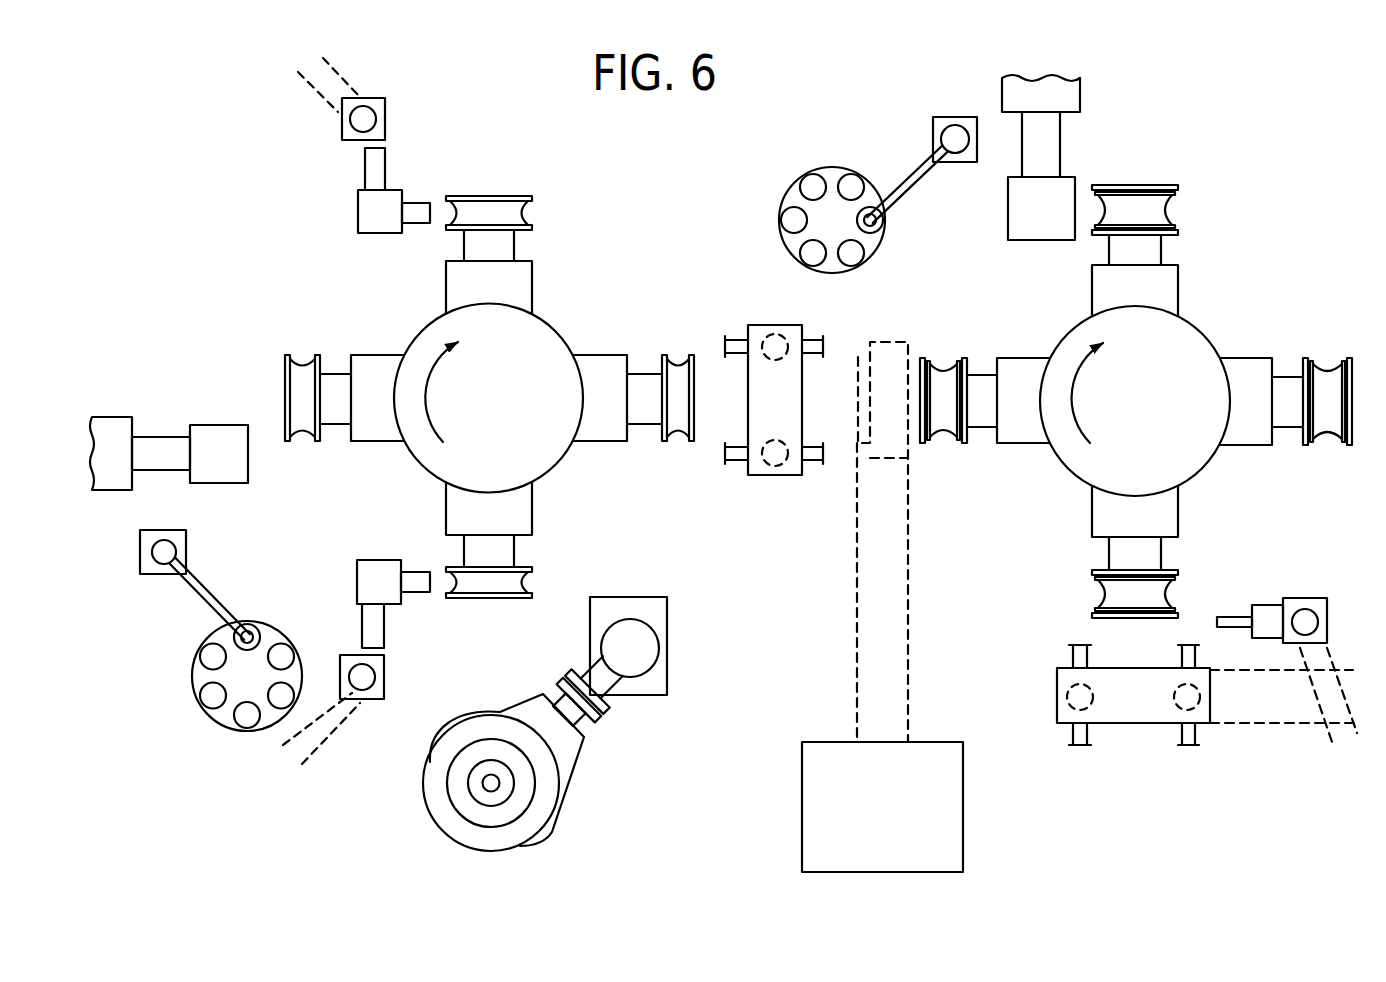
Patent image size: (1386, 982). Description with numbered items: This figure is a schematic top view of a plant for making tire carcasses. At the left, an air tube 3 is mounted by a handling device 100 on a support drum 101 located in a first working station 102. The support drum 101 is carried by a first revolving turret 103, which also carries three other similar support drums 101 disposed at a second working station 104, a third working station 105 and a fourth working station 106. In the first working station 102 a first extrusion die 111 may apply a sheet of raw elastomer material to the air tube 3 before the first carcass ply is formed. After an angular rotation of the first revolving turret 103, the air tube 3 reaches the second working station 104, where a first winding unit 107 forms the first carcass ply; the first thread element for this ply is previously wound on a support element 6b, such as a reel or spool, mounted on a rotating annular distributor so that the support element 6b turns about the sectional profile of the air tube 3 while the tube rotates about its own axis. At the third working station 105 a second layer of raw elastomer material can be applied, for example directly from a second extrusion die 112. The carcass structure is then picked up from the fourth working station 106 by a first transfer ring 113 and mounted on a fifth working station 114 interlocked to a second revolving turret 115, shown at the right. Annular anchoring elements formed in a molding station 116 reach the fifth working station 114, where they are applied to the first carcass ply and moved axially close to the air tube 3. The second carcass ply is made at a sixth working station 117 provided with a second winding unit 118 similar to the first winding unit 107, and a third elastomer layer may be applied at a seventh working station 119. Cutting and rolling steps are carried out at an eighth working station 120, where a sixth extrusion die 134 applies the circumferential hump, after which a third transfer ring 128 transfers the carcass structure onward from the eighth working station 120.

The air tube 3 is at (509, 836).
The support element 6b is at (261, 623).
The handling device 100 is at (553, 761).
The support drum 101 is at (301, 370).
The first working station 102 is at (535, 557).
The first revolving turret 103 is at (543, 438).
The second working station 104 is at (334, 437).
The third working station 105 is at (536, 239).
The fourth working station 106 is at (636, 339).
The first winding unit 107 is at (164, 408).
The first extrusion die 111 is at (388, 591).
The second extrusion die 112 is at (390, 198).
The first transfer ring 113 is at (762, 467).
The fifth working station 114 is at (980, 354).
The second revolving turret 115 is at (1185, 345).
The molding station 116 is at (900, 826).
The sixth working station 117 is at (1181, 250).
The second winding unit 118 is at (1074, 143).
The seventh working station 119 is at (1295, 348).
The eighth working station 120 is at (1190, 589).
The third transfer ring 128 is at (1138, 708).
The sixth extrusion die 134 is at (1322, 600).